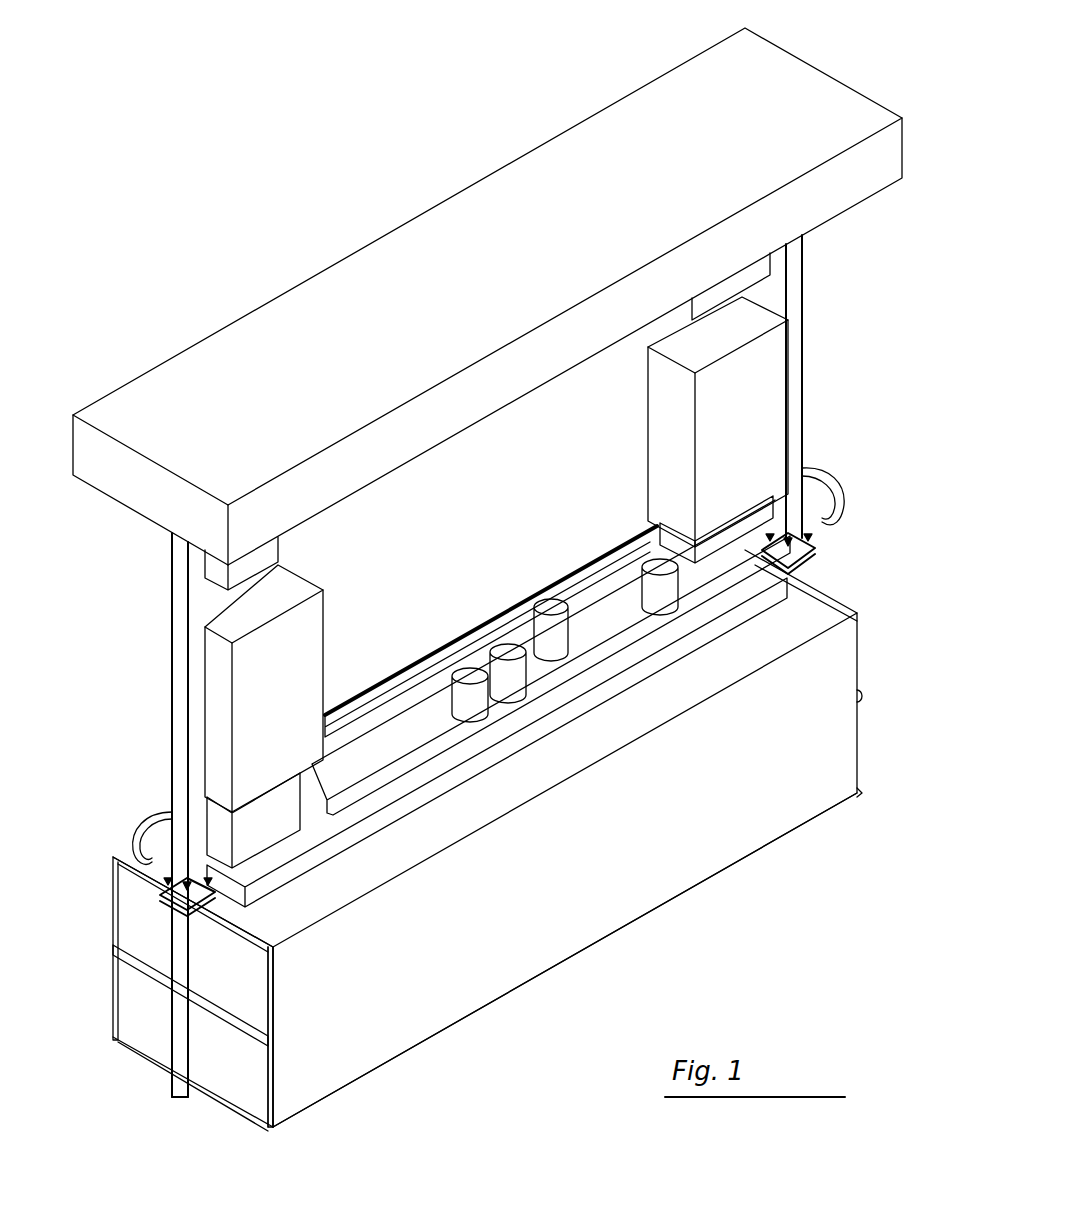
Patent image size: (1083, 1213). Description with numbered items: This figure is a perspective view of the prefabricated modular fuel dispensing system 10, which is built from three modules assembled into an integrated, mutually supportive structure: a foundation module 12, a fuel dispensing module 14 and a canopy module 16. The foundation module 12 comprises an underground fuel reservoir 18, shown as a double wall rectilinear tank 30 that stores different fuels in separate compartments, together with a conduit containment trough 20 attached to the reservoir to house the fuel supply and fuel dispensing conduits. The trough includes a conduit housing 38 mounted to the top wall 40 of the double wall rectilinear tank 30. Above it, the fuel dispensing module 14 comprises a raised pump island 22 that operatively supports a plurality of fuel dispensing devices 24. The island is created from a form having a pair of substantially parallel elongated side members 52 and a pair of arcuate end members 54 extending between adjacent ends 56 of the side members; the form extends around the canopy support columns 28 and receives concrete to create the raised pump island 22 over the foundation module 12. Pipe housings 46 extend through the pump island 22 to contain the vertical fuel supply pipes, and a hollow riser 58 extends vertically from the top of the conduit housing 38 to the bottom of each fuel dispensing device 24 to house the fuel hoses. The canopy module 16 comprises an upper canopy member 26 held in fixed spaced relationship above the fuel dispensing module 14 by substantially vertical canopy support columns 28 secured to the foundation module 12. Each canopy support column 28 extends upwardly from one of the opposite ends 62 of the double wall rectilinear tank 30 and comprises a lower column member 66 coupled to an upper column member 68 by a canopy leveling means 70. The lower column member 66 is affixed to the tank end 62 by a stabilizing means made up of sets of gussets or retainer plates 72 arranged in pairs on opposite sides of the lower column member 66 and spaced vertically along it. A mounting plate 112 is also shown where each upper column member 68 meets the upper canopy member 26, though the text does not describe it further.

The prefabricated modular fuel dispensing system 10 is at (243, 168).
The foundation module 12 is at (866, 743).
The fuel dispensing module 14 is at (140, 796).
The canopy module 16 is at (536, 108).
The underground fuel reservoir 18 is at (412, 1070).
The conduit containment trough 20 is at (395, 720).
The raised pump island 22 is at (518, 600).
The fuel dispensing device 24 is at (326, 592).
The upper canopy member 26 is at (755, 68).
The canopy support column 28 is at (153, 657).
The double wall rectilinear tank 30 is at (715, 862).
The conduit housing 38 is at (304, 864).
The top wall 40 is at (562, 762).
The pipe housing 46 is at (508, 647).
The elongated side member 52 is at (508, 610).
The arcuate end member 54 is at (131, 862).
The end of side member 56 is at (133, 833).
The hollow riser 58 is at (304, 823).
The opposite end of tank 62 is at (258, 1056).
The lower column member 66 is at (178, 1021).
The upper column member 68 is at (176, 609).
The canopy leveling means 70 is at (145, 912).
The gusset or retainer plate 72 is at (133, 887).
The mounting plate 112 is at (322, 526).